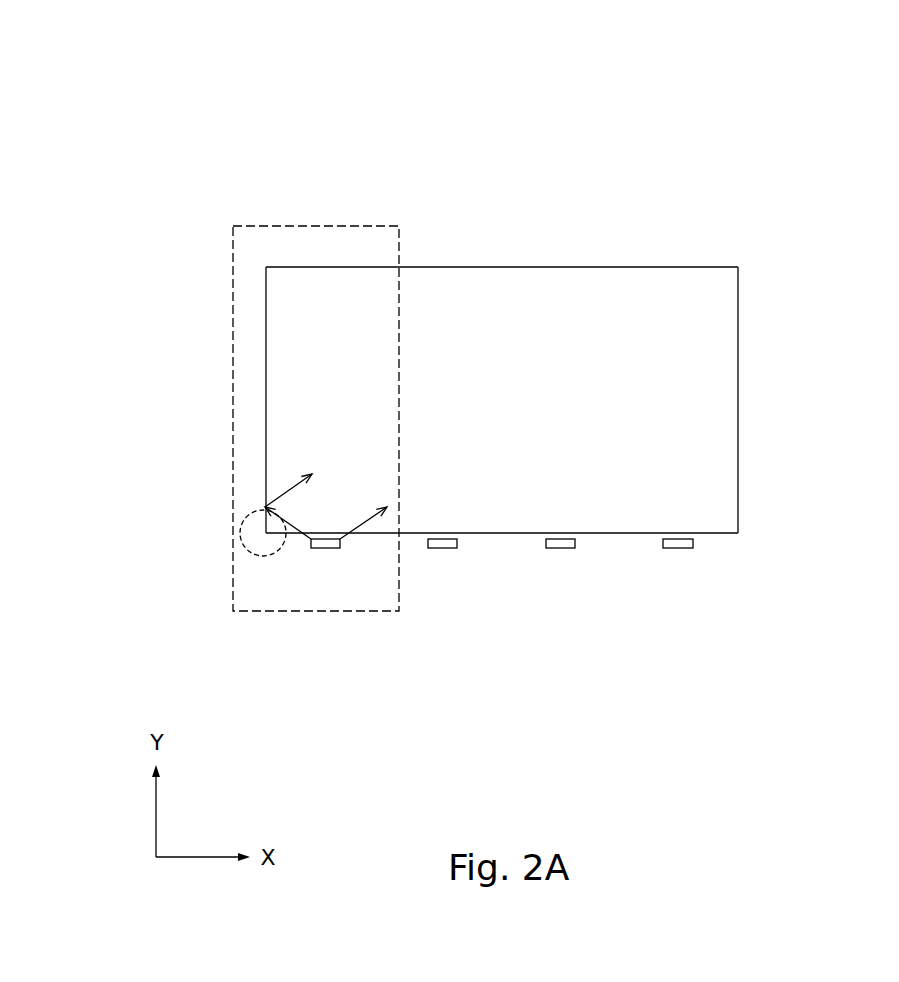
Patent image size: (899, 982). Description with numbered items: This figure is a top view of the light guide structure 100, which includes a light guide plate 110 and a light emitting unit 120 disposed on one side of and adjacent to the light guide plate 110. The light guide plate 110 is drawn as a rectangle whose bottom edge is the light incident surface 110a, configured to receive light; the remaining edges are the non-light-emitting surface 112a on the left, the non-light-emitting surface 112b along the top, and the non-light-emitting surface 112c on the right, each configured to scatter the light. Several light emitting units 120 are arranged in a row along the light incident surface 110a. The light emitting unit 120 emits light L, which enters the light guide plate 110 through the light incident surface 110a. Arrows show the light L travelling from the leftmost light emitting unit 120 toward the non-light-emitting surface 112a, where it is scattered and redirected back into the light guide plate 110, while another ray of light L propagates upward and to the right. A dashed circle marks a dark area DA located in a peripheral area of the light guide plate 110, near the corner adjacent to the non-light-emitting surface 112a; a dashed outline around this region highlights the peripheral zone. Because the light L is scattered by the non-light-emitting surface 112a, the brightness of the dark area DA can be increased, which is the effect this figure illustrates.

The light guide structure 100 is at (141, 133).
The light guide plate 110 is at (781, 368).
The light incident surface 110a is at (500, 533).
The non-light-emitting surface 112a is at (265, 403).
The non-light-emitting surface 112b is at (500, 267).
The non-light-emitting surface 112c is at (742, 467).
The light emitting unit 120 is at (325, 548).
The dark area DA is at (280, 553).
The light L is at (283, 490).